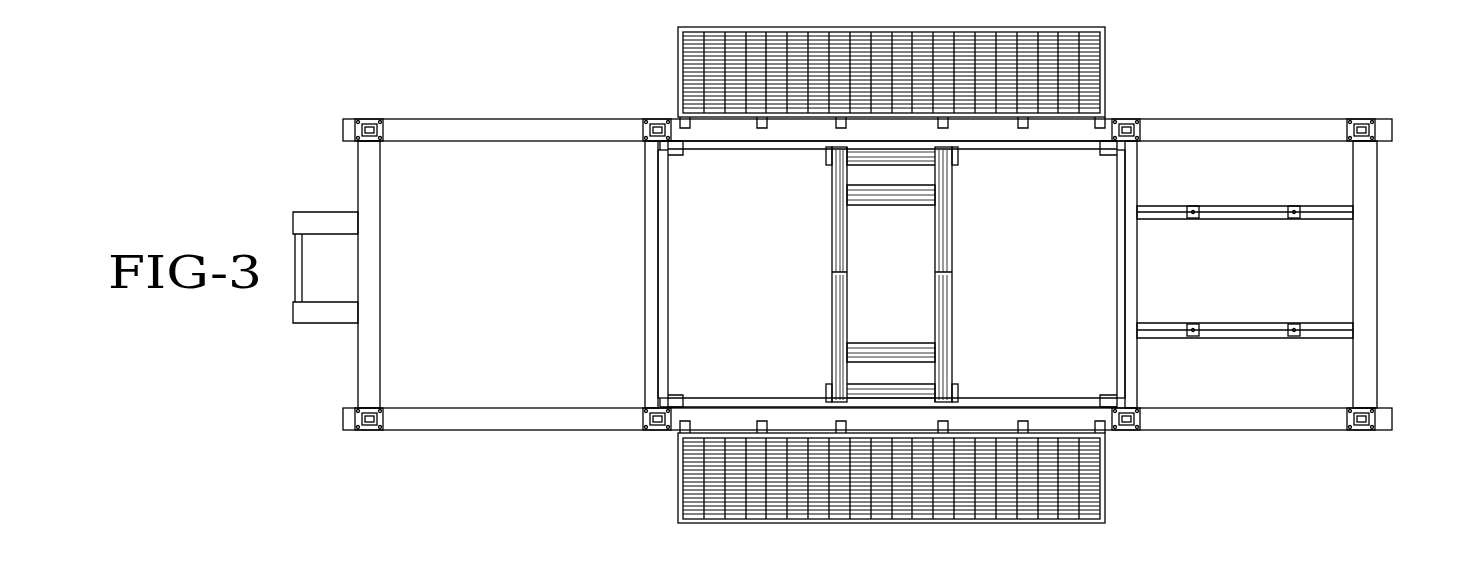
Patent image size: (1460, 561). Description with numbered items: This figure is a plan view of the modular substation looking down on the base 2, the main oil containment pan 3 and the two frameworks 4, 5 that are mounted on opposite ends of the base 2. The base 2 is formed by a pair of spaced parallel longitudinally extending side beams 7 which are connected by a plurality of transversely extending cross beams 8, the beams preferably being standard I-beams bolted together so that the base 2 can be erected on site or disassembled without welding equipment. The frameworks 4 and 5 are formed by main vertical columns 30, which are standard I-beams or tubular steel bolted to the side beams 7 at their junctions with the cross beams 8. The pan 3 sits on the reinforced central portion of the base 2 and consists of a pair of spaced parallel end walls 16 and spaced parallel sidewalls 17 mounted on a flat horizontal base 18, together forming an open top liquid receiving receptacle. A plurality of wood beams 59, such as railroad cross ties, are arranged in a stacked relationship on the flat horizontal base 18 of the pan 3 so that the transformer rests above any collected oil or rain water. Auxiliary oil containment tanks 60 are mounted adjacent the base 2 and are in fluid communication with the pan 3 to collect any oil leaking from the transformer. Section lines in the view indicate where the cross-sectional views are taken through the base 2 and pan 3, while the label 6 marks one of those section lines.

The base 2 is at (340, 183).
The main oil containment pan 3 is at (668, 180).
The framework 4 is at (311, 450).
The framework 5 is at (717, 333).
The section line 6 is at (623, 430).
The side beam 7 is at (501, 125).
The cross beam 8 is at (373, 262).
The end wall 16 is at (668, 228).
The sidewall 17 is at (775, 141).
The flat horizontal base 18 is at (1028, 208).
The main vertical column 30 is at (368, 119).
The wood beam 59 is at (940, 262).
The auxiliary oil containment tank 60 is at (680, 47).